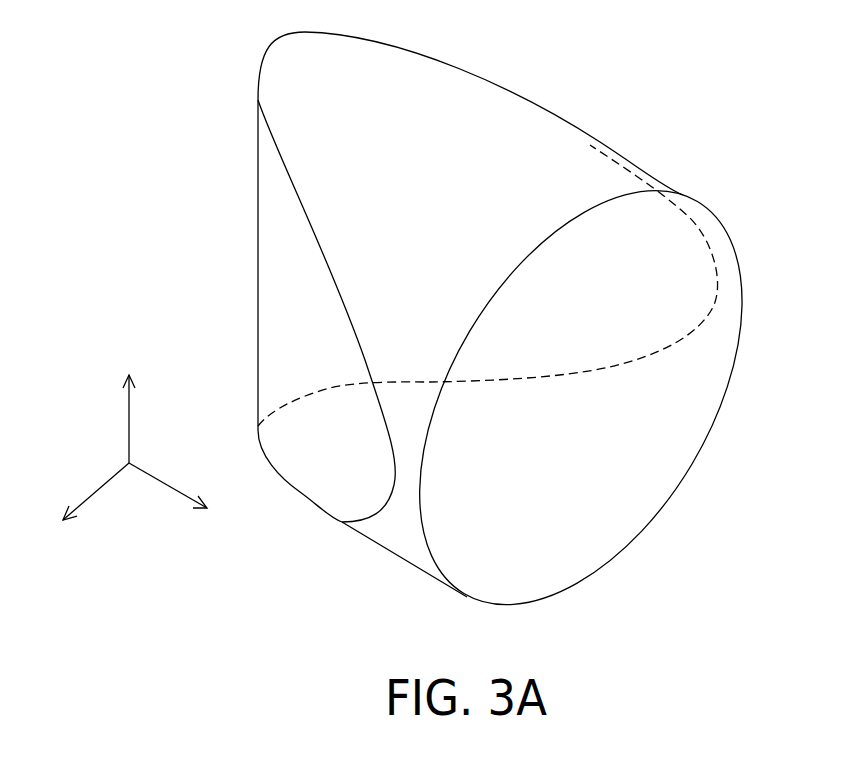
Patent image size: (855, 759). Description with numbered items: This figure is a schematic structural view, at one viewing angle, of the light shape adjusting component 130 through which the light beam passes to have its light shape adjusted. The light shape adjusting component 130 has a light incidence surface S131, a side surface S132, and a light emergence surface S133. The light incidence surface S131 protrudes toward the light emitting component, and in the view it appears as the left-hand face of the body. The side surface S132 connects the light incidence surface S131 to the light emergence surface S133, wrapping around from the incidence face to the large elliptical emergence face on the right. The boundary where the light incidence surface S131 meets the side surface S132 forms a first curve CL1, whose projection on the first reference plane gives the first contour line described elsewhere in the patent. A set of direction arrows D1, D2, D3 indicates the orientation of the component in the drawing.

The light shape adjusting component 130 is at (485, 332).
The first curve CL1 is at (423, 58).
The light incidence surface S131 is at (285, 283).
The side surface S132 is at (491, 118).
The light emergence surface S133 is at (640, 453).
The first direction D1 is at (130, 402).
The second direction D2 is at (80, 507).
The third direction D3 is at (185, 497).